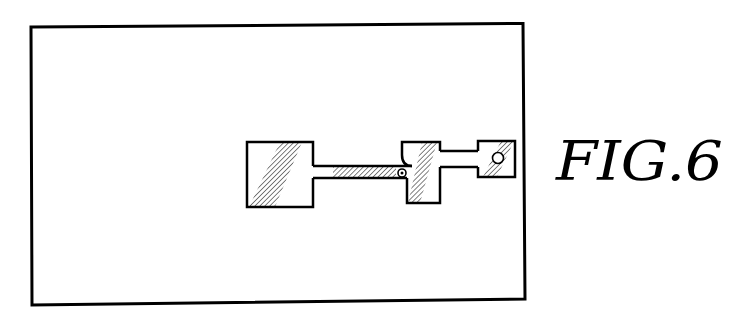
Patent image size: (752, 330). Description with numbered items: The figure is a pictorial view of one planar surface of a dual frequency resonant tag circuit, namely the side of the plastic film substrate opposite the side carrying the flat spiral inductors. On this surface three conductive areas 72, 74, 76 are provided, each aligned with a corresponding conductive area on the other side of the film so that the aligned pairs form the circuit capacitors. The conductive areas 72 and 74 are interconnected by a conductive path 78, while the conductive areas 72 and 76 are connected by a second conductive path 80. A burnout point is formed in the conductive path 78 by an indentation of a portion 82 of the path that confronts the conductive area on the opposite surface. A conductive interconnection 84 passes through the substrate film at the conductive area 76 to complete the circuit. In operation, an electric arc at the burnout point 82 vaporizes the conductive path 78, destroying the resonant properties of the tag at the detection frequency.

The conductive area 72 is at (415, 142).
The conductive area 74 is at (276, 142).
The conductive area 76 is at (505, 177).
The conductive path 78 is at (327, 166).
The conductive path 80 is at (453, 168).
The indented portion of conductive path 82 is at (398, 181).
The conductive interconnection 84 is at (500, 153).